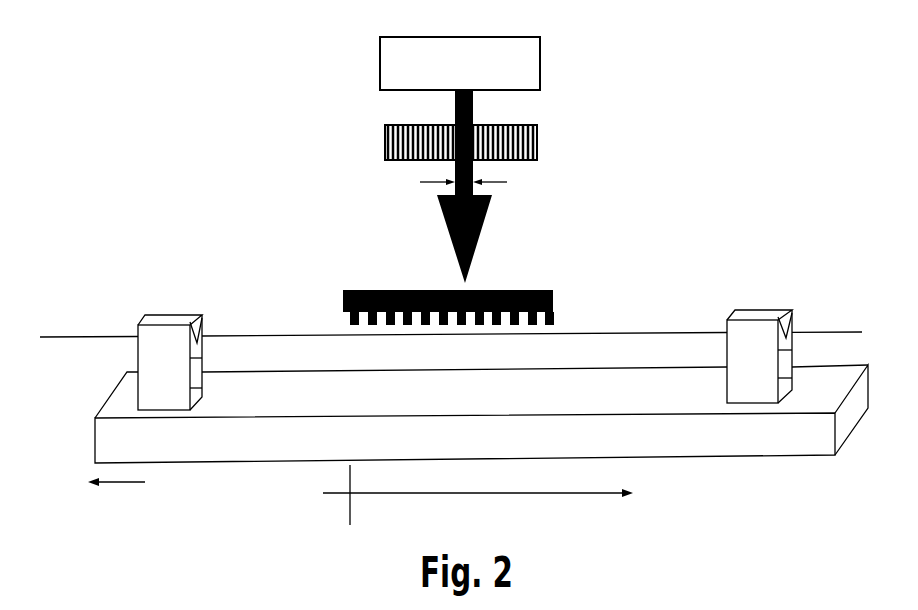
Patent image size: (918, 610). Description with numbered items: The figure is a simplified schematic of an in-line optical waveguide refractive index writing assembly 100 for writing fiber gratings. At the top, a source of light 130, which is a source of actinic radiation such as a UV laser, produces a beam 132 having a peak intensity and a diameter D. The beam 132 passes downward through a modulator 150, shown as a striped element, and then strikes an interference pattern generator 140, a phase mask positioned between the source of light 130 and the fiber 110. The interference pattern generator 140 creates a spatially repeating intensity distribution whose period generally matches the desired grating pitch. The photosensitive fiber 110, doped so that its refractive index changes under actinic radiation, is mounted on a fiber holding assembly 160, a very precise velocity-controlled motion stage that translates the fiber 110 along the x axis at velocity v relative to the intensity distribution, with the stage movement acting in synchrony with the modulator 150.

The index writing assembly 100 is at (145, 58).
The fiber 110 is at (610, 324).
The source of light 130 is at (555, 62).
The beam 132 is at (506, 218).
The interference pattern generator 140 is at (329, 293).
The modulator 150 is at (369, 143).
The fiber holding assembly 160 is at (481, 386).